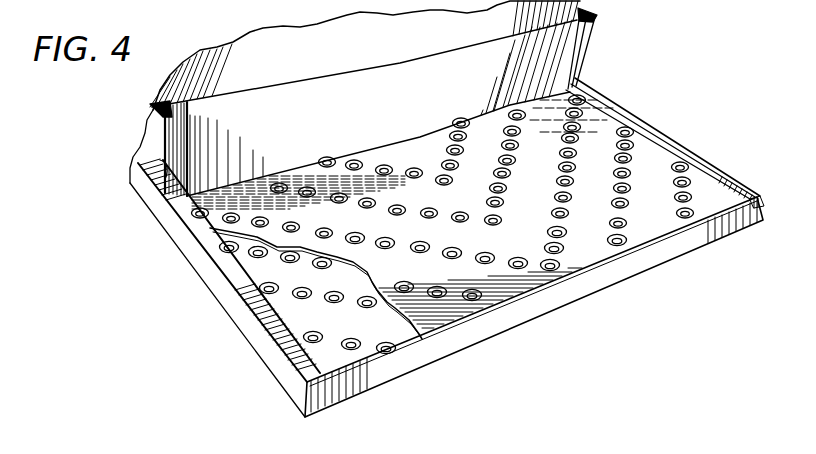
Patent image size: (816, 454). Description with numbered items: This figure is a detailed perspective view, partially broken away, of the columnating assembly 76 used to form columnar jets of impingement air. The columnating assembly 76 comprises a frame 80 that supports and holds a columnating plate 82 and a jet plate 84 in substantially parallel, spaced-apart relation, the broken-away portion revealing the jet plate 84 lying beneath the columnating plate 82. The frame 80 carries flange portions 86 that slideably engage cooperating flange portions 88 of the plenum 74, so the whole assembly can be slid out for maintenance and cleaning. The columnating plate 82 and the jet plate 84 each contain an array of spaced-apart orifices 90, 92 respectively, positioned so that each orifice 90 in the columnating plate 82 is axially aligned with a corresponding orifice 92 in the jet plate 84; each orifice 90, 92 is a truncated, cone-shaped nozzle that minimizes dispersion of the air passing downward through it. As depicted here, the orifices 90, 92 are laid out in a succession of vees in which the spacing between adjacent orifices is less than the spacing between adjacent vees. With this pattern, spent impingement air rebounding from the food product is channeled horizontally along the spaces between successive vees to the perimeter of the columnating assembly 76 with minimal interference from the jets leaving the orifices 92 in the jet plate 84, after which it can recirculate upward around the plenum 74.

The plenum 74 is at (574, 40).
The columnating assembly 76 is at (707, 160).
The frame 80 is at (660, 250).
The columnating plate 82 is at (445, 315).
The jet plate 84 is at (283, 312).
The flange portions 86 is at (187, 222).
The cooperating flange portions 88 is at (173, 187).
The orifices 90 is at (563, 258).
The orifices 92 is at (358, 335).